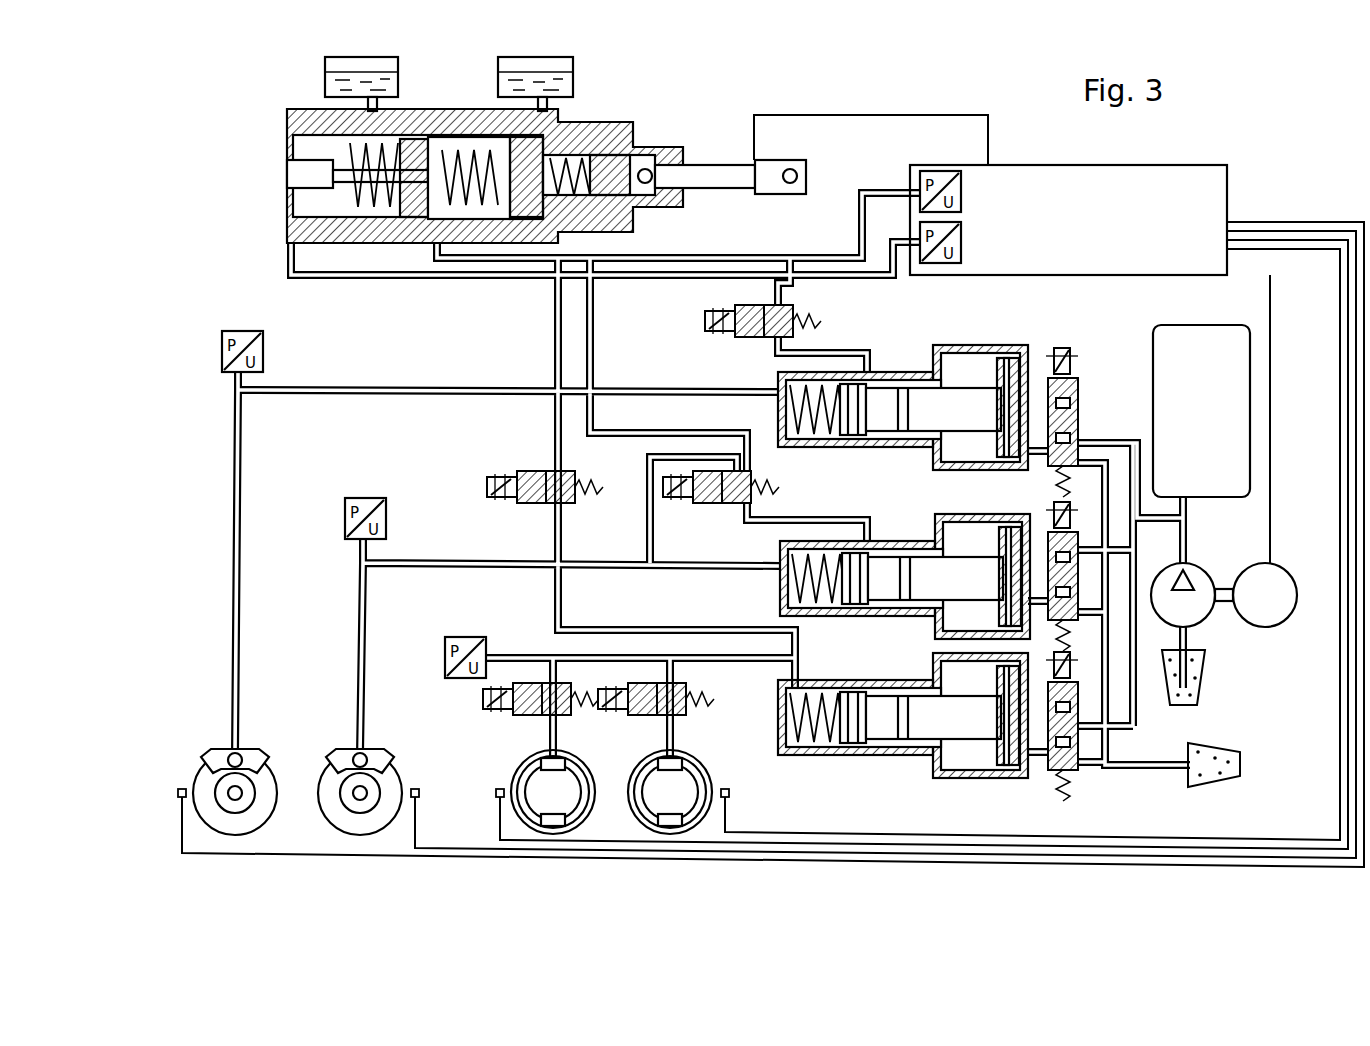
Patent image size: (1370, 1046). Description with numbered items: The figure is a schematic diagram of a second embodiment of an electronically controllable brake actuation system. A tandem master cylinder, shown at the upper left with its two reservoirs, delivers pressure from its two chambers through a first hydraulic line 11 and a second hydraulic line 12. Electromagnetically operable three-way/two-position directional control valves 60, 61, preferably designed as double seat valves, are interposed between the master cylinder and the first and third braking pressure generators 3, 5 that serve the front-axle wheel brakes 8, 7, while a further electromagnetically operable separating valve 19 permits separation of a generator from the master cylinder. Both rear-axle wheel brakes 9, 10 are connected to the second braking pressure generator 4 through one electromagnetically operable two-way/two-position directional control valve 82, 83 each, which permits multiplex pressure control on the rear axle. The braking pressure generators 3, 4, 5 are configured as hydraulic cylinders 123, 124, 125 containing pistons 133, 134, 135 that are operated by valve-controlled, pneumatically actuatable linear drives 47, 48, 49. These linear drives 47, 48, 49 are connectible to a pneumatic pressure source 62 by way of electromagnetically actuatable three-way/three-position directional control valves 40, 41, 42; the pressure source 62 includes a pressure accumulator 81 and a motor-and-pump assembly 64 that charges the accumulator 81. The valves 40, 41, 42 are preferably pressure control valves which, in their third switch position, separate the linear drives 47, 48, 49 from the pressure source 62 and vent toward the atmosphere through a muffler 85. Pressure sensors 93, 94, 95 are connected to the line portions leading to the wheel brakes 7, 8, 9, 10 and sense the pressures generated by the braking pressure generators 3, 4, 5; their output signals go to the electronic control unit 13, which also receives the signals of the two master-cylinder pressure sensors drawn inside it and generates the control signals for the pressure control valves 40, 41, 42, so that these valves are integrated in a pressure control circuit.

The first braking pressure generator 3 is at (1001, 515).
The second braking pressure generator 4 is at (966, 783).
The third braking pressure generator 5 is at (976, 340).
The hydraulic wheel brake 7 is at (252, 752).
The hydraulic wheel brake 8 is at (375, 752).
The second hydraulic wheel brake 9 is at (585, 777).
The hydraulic wheel brake 10 is at (702, 778).
The first hydraulic line 11 is at (500, 262).
The second hydraulic line 12 is at (399, 278).
The electronic control unit 13 is at (1228, 192).
The separating valve 19 is at (520, 476).
The three-way/three-position directional control valve 40 is at (1080, 545).
The three-way/three-position directional control valve 41 is at (1080, 728).
The three-way/three-position directional control valve 42 is at (1078, 385).
The linear drive 47 is at (985, 517).
The linear drive 48 is at (1013, 780).
The linear drive 49 is at (1018, 348).
The three-way/two-position directional control valve 60 is at (753, 480).
The three-way/two-position directional control valve 61 is at (797, 312).
The pneumatic pressure source 62 is at (1274, 320).
The motor-and-pump assembly 64 is at (1150, 634).
The pressure accumulator 81 is at (1213, 405).
The two-way/two-position directional control valve 82 is at (518, 718).
The two-way/two-position directional control valve 83 is at (690, 718).
The muffler 85 is at (1238, 745).
The pressure sensor 93 is at (375, 498).
The pressure sensor 94 is at (482, 637).
The pressure sensor 95 is at (262, 350).
The hydraulic cylinder 123 is at (843, 612).
The hydraulic cylinder 124 is at (858, 755).
The hydraulic cylinder 125 is at (868, 448).
The piston 133 is at (851, 541).
The piston 134 is at (848, 755).
The piston 135 is at (862, 380).